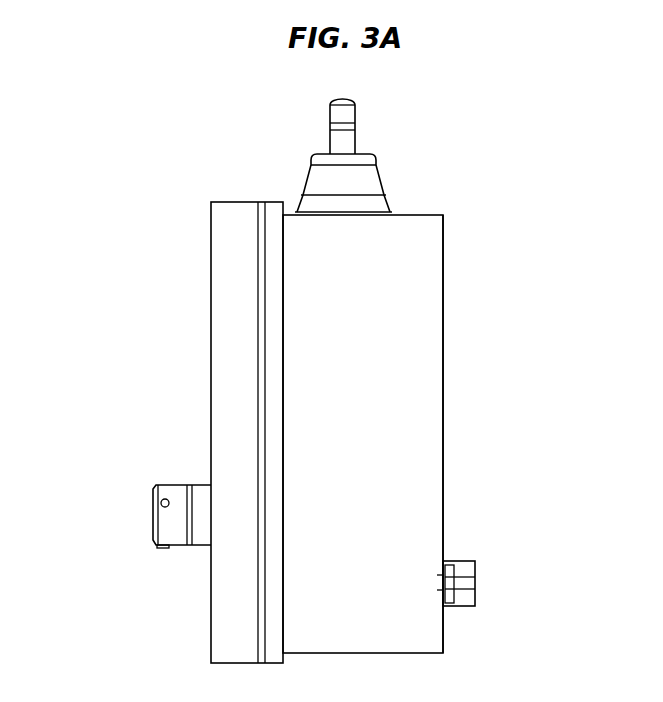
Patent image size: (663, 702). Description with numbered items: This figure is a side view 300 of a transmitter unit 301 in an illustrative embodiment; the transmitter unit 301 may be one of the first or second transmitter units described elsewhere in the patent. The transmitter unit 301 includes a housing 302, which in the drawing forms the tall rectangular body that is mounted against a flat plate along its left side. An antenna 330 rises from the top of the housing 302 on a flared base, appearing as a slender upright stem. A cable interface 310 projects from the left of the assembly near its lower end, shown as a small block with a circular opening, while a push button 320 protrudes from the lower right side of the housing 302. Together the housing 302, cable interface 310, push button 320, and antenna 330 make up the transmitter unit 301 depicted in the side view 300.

The side view 300 is at (300, 381).
The transmitter unit 301 is at (372, 466).
The housing 302 is at (443, 390).
The cable interface 310 is at (170, 517).
The push button 320 is at (468, 597).
The antenna 330 is at (350, 113).